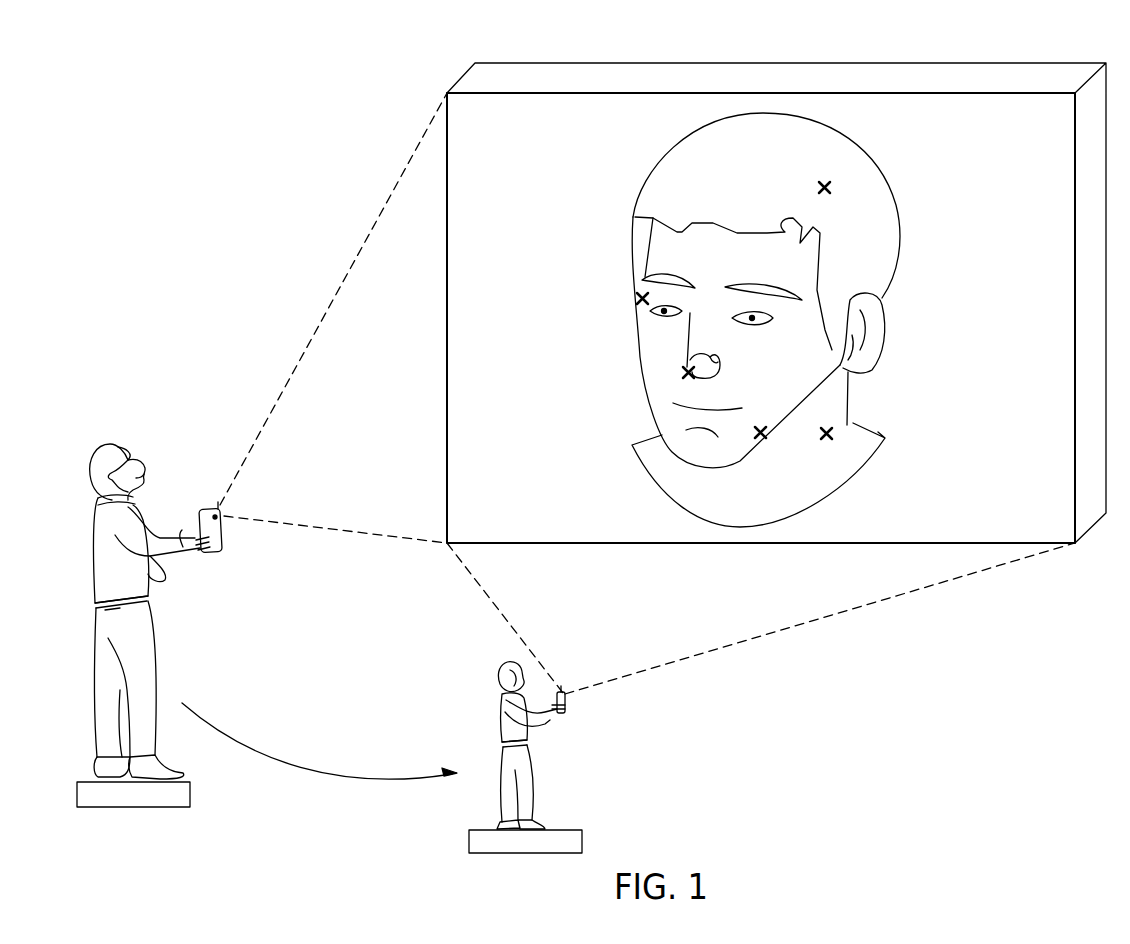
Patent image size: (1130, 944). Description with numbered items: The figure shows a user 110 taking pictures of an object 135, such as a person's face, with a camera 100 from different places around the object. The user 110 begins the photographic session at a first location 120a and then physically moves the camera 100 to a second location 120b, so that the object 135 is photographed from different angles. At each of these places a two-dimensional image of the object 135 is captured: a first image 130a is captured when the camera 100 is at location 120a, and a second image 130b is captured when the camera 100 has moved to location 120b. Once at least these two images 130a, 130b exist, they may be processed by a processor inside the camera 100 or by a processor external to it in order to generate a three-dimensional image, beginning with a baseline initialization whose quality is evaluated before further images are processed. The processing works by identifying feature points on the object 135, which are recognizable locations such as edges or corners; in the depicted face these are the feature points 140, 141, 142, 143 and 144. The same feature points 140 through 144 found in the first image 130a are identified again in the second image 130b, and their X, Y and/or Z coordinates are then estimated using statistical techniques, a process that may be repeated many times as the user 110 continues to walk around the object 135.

The camera 100 is at (222, 540).
The user 110 is at (93, 549).
The location 120a is at (190, 792).
The location 120b is at (582, 844).
The image 130a is at (960, 103).
The image 130b is at (1023, 76).
The object 135 is at (597, 203).
The feature point 140 is at (640, 300).
The feature point 141 is at (690, 371).
The feature point 142 is at (759, 430).
The feature point 143 is at (834, 435).
The feature point 144 is at (822, 185).